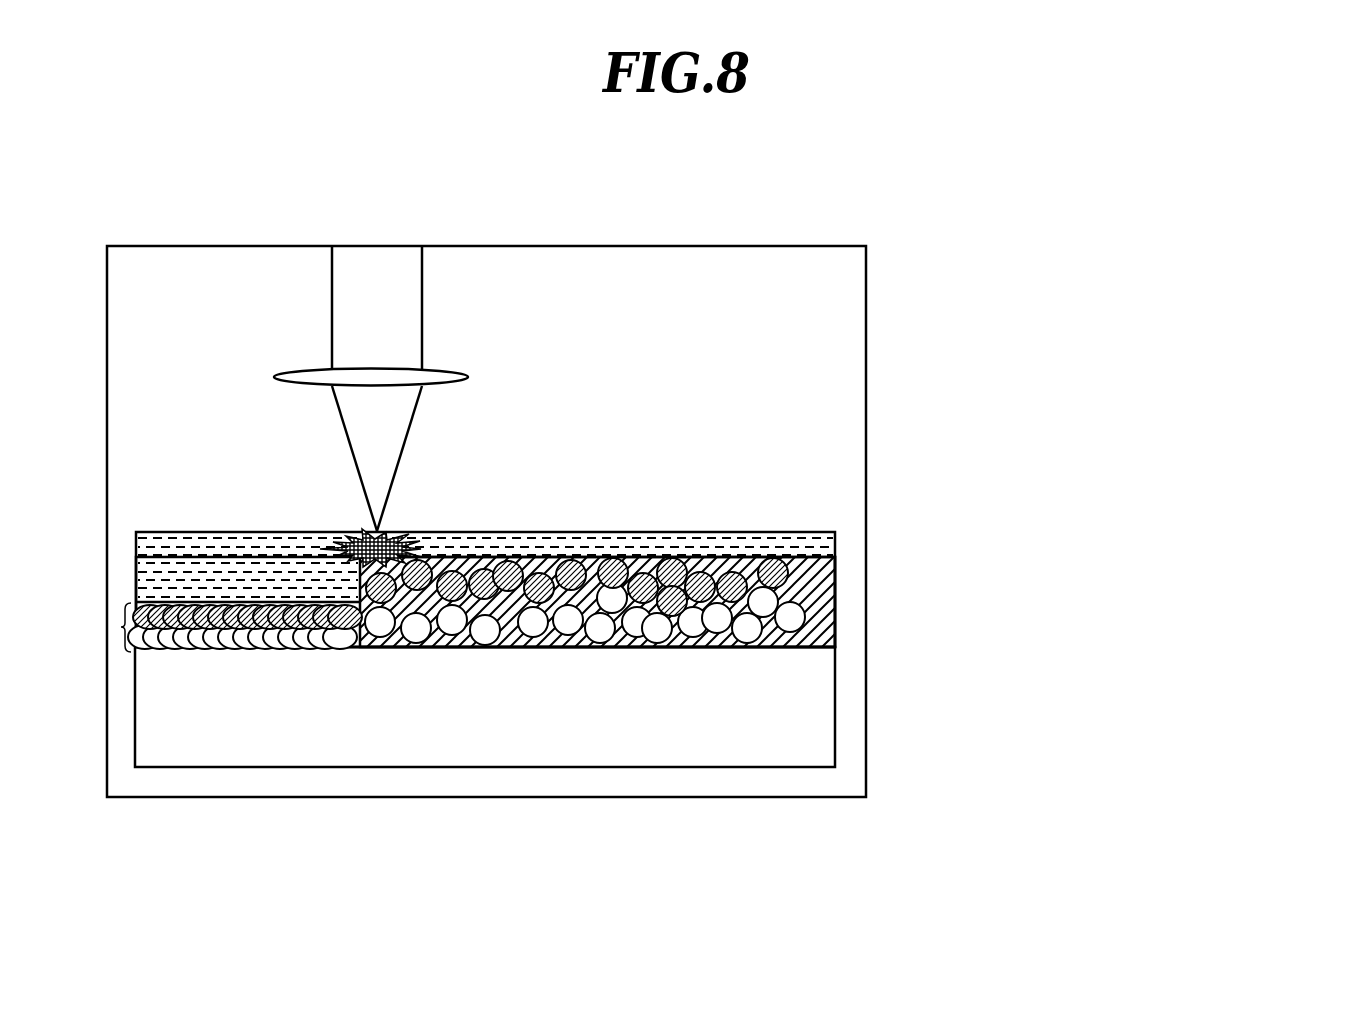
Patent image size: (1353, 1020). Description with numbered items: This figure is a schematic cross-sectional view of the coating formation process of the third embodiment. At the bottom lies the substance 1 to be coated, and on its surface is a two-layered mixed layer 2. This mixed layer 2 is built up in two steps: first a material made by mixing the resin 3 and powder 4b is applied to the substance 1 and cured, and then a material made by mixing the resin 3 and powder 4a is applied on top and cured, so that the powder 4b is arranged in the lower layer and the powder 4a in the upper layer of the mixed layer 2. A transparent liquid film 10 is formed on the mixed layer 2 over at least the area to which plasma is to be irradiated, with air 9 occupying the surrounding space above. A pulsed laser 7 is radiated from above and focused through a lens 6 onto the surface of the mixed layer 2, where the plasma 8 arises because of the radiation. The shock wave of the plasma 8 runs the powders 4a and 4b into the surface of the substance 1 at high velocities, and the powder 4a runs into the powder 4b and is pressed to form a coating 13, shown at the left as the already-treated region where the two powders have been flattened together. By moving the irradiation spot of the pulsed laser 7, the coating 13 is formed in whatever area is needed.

The substance 1 is at (833, 710).
The mixed layer 2 is at (838, 631).
The resin 3 is at (833, 592).
The powder 4a is at (790, 563).
The powder 4b is at (797, 618).
The lens 6 is at (470, 377).
The pulsed laser 7 is at (405, 463).
The plasma 8 is at (412, 543).
The air 9 is at (855, 257).
The transparent liquid film 10 is at (778, 535).
The coating 13 is at (122, 632).